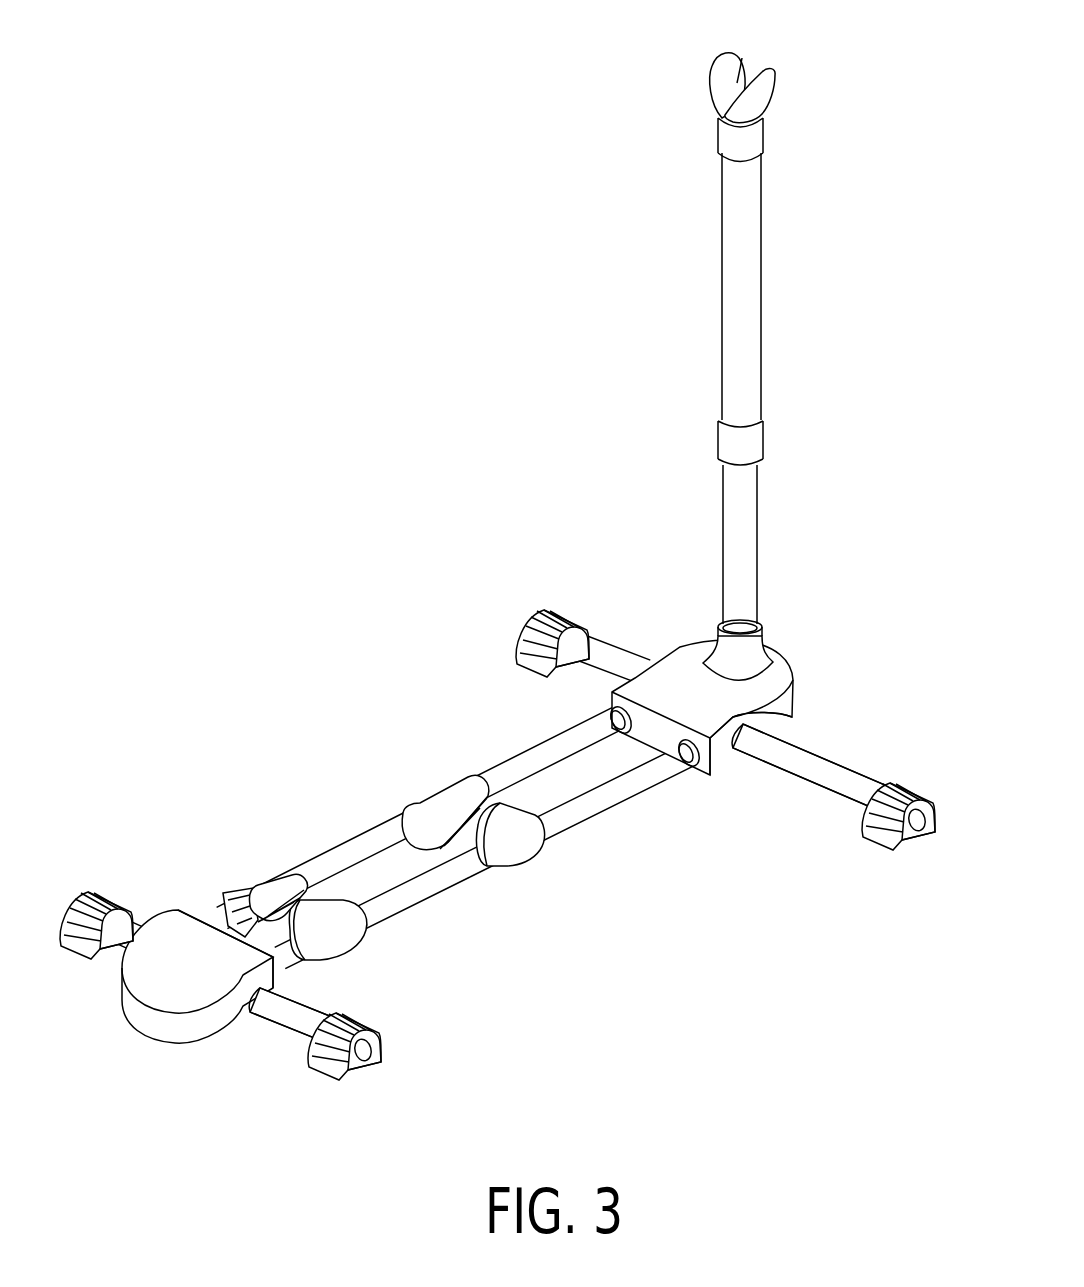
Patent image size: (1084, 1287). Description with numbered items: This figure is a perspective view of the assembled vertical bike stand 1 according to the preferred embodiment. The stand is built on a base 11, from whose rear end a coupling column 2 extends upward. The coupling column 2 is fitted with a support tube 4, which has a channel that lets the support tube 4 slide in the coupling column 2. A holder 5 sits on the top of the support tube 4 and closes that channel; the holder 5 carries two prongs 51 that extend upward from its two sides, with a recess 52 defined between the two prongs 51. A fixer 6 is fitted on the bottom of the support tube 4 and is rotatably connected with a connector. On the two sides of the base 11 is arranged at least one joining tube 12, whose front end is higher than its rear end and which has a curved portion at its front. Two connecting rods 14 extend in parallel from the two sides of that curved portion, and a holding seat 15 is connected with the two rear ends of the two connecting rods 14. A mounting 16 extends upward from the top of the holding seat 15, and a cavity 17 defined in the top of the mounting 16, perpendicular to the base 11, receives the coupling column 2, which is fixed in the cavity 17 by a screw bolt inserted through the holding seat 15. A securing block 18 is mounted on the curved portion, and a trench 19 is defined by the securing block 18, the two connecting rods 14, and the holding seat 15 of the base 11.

The vertical bike stand 1 is at (467, 537).
The coupling column 2 is at (750, 563).
The support tube 4 is at (735, 265).
The holder 5 is at (753, 143).
The prongs 51 is at (712, 77).
The recess 52 is at (742, 58).
The fixer 6 is at (750, 442).
The base 11 is at (332, 848).
The joining tube 12 is at (577, 823).
The connecting rods 14 is at (532, 762).
The holding seat 15 is at (727, 753).
The mounting 16 is at (760, 640).
The cavity 17 is at (747, 627).
The securing block 18 is at (187, 1033).
The trench 19 is at (383, 870).